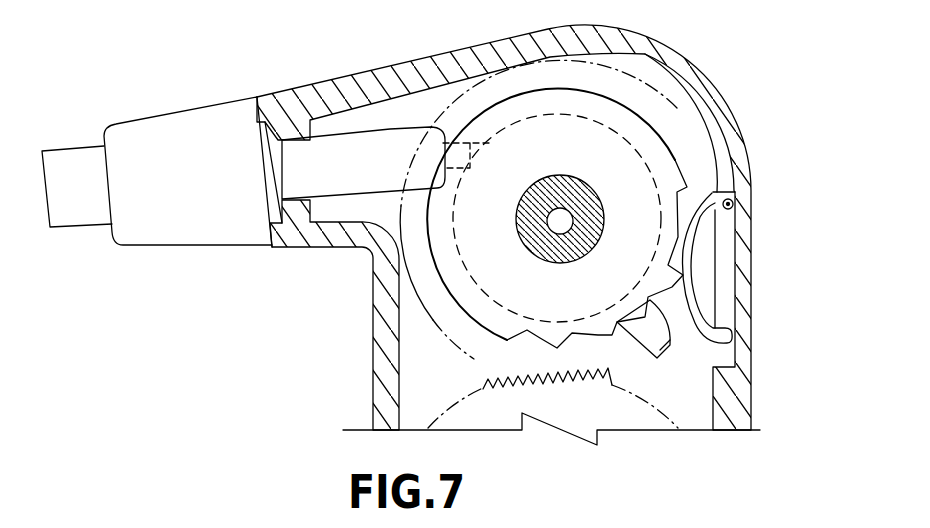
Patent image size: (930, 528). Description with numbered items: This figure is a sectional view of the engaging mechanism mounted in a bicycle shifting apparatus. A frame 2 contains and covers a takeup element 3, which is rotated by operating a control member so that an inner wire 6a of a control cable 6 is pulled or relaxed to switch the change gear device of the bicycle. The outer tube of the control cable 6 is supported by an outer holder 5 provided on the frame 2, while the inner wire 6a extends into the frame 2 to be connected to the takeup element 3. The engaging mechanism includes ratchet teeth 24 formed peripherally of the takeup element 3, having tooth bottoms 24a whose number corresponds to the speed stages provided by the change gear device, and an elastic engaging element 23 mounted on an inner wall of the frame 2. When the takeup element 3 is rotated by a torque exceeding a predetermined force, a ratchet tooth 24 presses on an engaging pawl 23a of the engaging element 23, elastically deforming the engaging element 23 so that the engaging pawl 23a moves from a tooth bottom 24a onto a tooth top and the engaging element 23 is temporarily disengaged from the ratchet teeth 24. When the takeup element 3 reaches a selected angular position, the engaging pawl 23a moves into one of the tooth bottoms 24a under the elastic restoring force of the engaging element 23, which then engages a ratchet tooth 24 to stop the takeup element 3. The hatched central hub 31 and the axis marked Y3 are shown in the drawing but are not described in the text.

The frame 2 is at (736, 123).
The takeup element 3 is at (607, 122).
The outer holder 5 is at (143, 233).
The control cable 6 is at (77, 217).
The inner wire 6a is at (470, 143).
The reel hub 31 is at (580, 192).
The reel axis Y3 is at (556, 224).
The engaging element 23 is at (698, 222).
The engaging pawl 23a is at (672, 268).
The ratchet teeth 24 is at (592, 320).
The tooth bottoms 24a is at (597, 378).